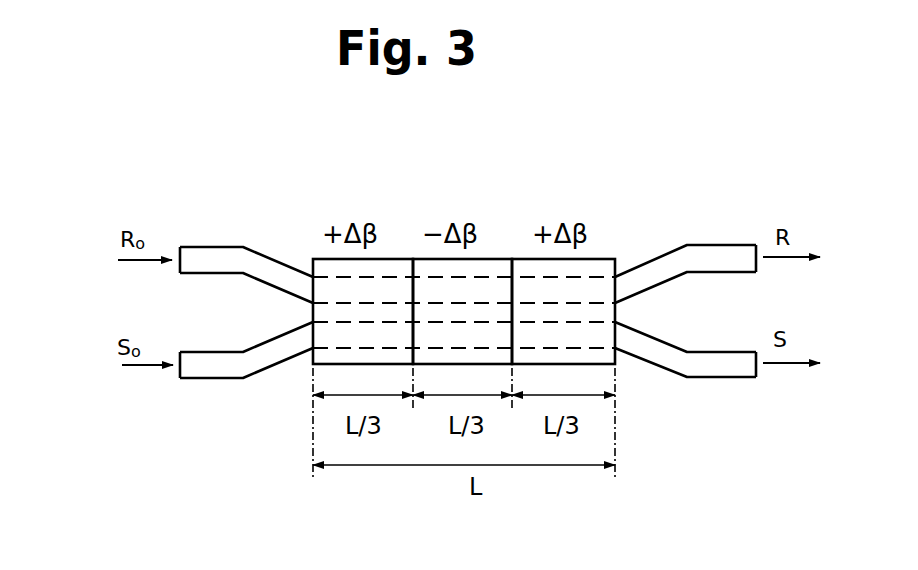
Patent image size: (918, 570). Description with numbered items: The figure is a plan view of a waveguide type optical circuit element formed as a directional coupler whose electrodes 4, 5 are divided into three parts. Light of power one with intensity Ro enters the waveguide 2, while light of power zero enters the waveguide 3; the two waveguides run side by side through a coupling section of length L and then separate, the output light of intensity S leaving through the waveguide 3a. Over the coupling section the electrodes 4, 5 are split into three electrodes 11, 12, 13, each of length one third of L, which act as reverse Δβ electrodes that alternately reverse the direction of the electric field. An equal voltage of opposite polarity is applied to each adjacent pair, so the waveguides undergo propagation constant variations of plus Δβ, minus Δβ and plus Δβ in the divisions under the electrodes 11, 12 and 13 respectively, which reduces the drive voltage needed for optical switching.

The waveguide 2 is at (222, 247).
The waveguide 3 is at (208, 352).
The waveguide 3a is at (715, 378).
The electrode 4 is at (464, 248).
The electrode 5 is at (416, 212).
The electrode 11 is at (323, 259).
The electrode 12 is at (504, 259).
The electrode 13 is at (612, 259).